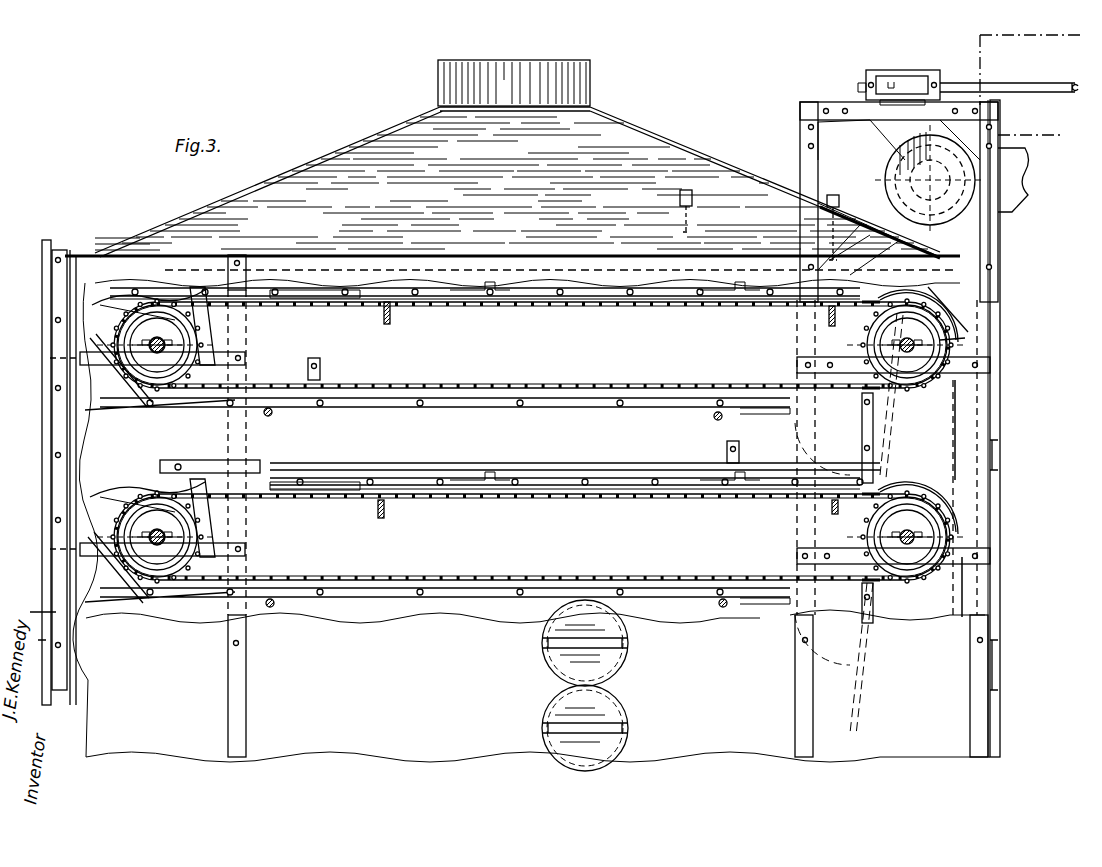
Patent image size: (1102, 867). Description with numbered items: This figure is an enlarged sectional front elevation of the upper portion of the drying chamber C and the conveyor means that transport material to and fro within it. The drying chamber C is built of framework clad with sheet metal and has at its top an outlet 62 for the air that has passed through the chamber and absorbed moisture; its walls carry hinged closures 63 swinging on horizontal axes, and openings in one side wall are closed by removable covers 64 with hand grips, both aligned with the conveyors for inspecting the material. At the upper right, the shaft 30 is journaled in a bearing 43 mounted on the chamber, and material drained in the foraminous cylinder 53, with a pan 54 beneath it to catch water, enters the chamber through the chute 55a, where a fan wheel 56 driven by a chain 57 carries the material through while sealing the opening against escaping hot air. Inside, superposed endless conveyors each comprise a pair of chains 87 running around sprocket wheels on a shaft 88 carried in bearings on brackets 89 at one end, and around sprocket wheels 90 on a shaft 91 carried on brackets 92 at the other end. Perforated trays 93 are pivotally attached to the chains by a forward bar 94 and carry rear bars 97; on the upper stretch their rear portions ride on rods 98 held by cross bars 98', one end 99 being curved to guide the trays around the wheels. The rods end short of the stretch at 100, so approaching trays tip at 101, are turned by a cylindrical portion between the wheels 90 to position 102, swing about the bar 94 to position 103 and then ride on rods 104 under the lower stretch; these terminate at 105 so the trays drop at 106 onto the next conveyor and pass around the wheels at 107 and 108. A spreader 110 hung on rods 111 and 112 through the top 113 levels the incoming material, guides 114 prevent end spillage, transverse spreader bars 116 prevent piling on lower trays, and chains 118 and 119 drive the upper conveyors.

The drying chamber C is at (398, 130).
The shaft 30 is at (1025, 88).
The bearing 43 is at (900, 83).
The foraminous cylinder 53 is at (978, 52).
The pan 54 is at (1014, 183).
The chute 55a is at (920, 232).
The fan wheel 56 is at (893, 155).
The chain 57 is at (998, 268).
The outlet 62 is at (592, 80).
The hinged closures 63 is at (45, 325).
The removable covers 64 is at (607, 655).
The chains 87 is at (717, 305).
The shaft 88 is at (906, 343).
The brackets 89 is at (986, 365).
The sprocket wheels 90 is at (128, 378).
The shaft 91 is at (149, 344).
The brackets 92 is at (240, 360).
The trays 93 is at (598, 305).
The bar 94 is at (462, 300).
The bars 97 is at (535, 296).
The rods 98 is at (485, 419).
The cross bars 98' is at (601, 422).
The curved end 99 is at (950, 312).
The rod end 100 is at (325, 297).
The tray tipping position 101 is at (215, 322).
The tray position 102 is at (123, 308).
The tray position 103 is at (125, 605).
The rods 104 is at (205, 410).
The rod termination point 105 is at (763, 410).
The tray dumping position 106 is at (866, 420).
The tray position 107 is at (954, 414).
The tray position 108 is at (966, 335).
The spreader 110 is at (685, 272).
The supporting rod 111 is at (815, 208).
The supporting rod 112 is at (693, 203).
The top 113 is at (834, 210).
The guides 114 is at (190, 262).
The spreaders 116 is at (321, 368).
The chain 118 is at (992, 665).
The chain 119 is at (992, 460).